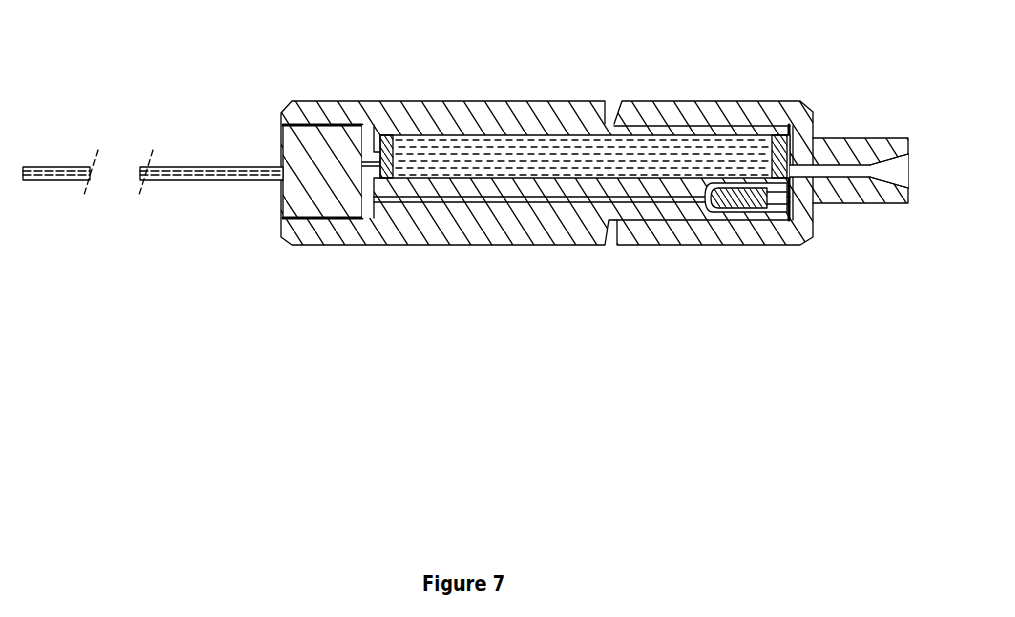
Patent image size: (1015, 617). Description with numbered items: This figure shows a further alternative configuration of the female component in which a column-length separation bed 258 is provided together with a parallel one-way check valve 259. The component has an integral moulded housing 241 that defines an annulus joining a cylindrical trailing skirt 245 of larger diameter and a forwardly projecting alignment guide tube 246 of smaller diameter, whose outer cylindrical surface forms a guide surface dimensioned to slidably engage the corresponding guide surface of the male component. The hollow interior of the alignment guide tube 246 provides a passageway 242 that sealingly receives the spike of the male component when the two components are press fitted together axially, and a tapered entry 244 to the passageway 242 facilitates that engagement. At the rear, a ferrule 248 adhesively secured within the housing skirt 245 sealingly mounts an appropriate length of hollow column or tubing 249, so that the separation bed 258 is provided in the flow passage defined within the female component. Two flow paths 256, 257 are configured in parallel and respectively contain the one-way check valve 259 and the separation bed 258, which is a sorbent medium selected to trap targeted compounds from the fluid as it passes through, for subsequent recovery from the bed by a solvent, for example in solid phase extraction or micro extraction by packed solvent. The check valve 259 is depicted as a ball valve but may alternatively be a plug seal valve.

The housing 241 is at (798, 97).
The passageway 242 is at (849, 172).
The tapered entry 244 is at (905, 183).
The trailing skirt 245 is at (703, 108).
The alignment guide tube 246 is at (868, 138).
The rear ferrule 248 is at (328, 210).
The hollow column or tubing 249 is at (195, 183).
The flow path 256 is at (452, 200).
The flow path 257 is at (370, 140).
The separation bed 258 is at (512, 172).
The one-way check valve 259 is at (743, 225).